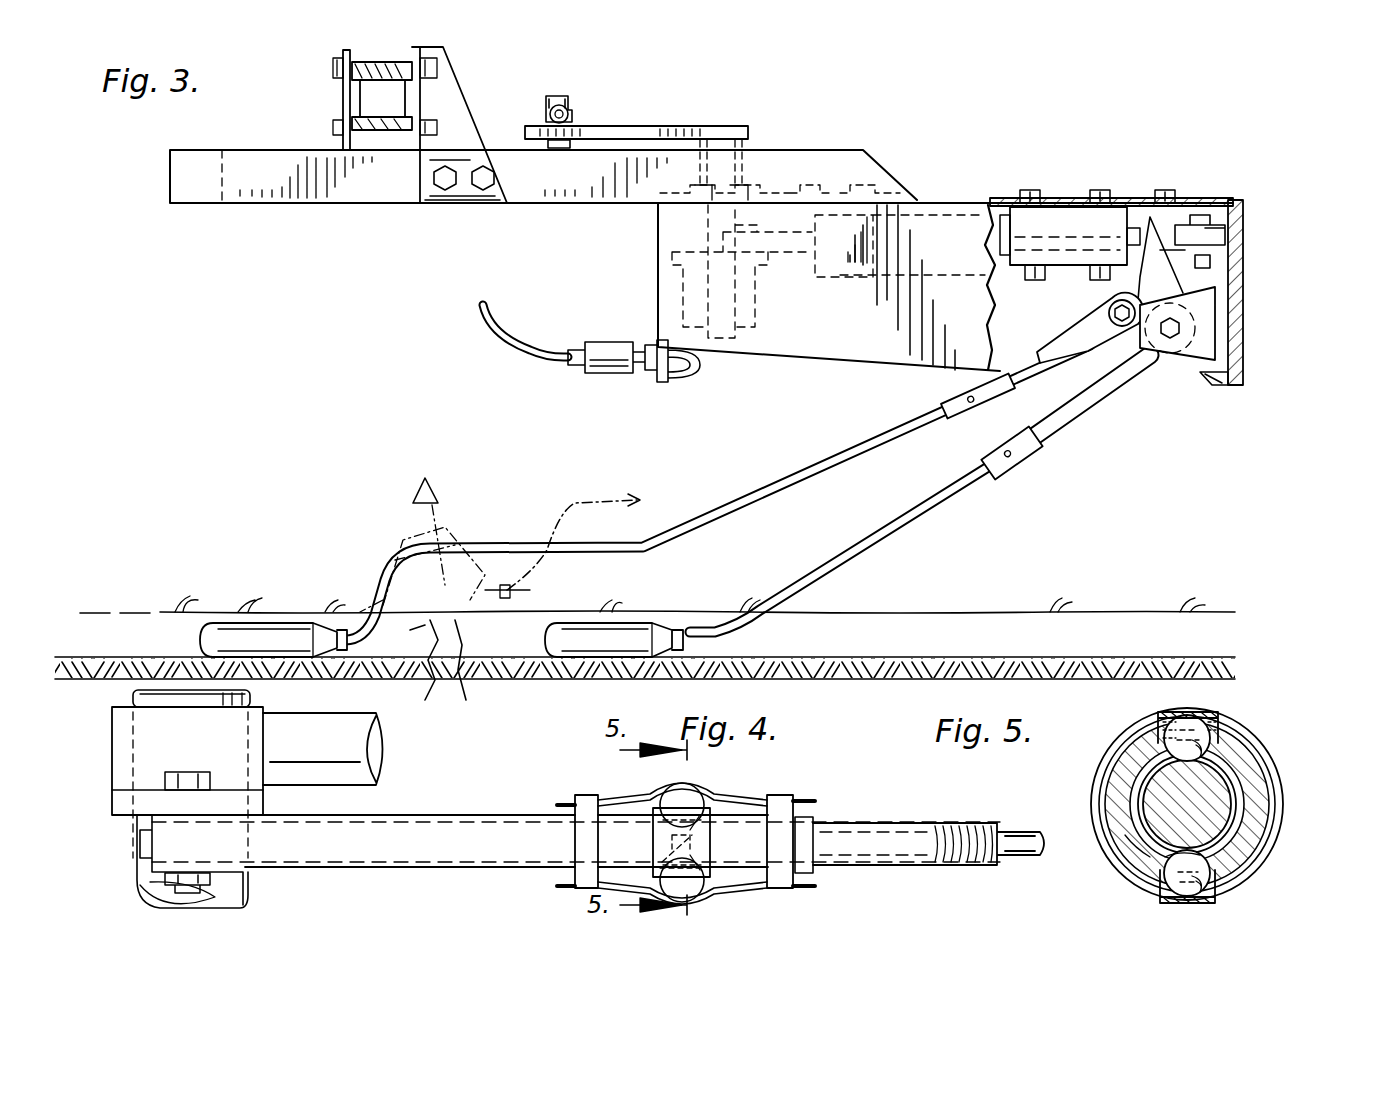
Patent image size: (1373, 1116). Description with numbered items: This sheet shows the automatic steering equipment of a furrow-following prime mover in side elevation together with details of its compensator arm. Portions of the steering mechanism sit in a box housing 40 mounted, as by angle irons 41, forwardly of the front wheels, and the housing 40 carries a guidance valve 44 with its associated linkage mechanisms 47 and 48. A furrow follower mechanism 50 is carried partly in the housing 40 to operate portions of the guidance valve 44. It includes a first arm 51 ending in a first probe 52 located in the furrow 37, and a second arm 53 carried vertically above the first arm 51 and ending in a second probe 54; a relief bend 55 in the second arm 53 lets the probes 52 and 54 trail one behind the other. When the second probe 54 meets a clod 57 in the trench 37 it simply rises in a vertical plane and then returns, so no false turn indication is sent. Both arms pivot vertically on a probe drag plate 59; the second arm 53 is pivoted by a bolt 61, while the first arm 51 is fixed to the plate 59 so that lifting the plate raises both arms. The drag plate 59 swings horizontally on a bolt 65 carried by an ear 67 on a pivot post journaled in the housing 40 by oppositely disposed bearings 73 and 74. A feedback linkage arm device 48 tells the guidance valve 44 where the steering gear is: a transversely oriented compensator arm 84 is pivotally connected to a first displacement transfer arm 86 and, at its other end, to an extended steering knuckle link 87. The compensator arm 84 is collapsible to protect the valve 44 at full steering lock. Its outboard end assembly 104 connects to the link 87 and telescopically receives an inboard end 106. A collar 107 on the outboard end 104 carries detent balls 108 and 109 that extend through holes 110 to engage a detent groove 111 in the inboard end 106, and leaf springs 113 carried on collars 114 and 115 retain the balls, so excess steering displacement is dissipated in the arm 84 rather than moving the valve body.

In FIG. 3, the furrow 37 is at (1145, 620).
In FIG. 3, the box housing 40 is at (830, 314).
In FIG. 3, the angle irons 41 is at (835, 168).
In FIG. 3, the guidance valve 44 is at (935, 225).
In FIG. 3, the linkage mechanism 47 is at (1168, 222).
In FIG. 3, the feedback linkage arm device 48 is at (636, 115).
In FIG. 3, the furrow follower mechanism 50 is at (920, 493).
In FIG. 3, the first arm 51 is at (960, 478).
In FIG. 3, the first probe 52 is at (640, 632).
In FIG. 3, the second arm 53 is at (830, 455).
In FIG. 3, the second probe 54 is at (262, 630).
In FIG. 3, the relief bend 55 is at (510, 545).
In FIG. 3, the clod 57 is at (432, 672).
In FIG. 3, the probe drag plate 59 is at (1130, 295).
In FIG. 3, the bolt 61 is at (1105, 313).
In FIG. 3, the bolt 65 is at (1172, 338).
In FIG. 3, the ear 67 is at (1212, 310).
In FIG. 3, the bearing 73 is at (1243, 215).
In FIG. 3, the bearing 74 is at (1232, 380).
In FIG. 3, the compensator arm 84 is at (556, 90).
In FIG. 4, the compensator arm 84 is at (880, 826).
In FIG. 3, the first displacement transfer arm 86 is at (650, 128).
In FIG. 4, the steering knuckle link 87 is at (200, 750).
In FIG. 4, the outboard end assembly 104 is at (423, 817).
In FIG. 5, the outboard end assembly 104 is at (1118, 800).
In FIG. 4, the inboard end 106 is at (935, 828).
In FIG. 5, the inboard end 106 is at (1135, 840).
In FIG. 4, the collar 107 is at (686, 820).
In FIG. 5, the collar 107 is at (1265, 778).
In FIG. 4, the detent ball 108 is at (680, 808).
In FIG. 5, the detent ball 108 is at (1205, 730).
In FIG. 4, the detent ball 109 is at (705, 885).
In FIG. 5, the detent ball 109 is at (1165, 878).
In FIG. 4, the holes 110 is at (672, 825).
In FIG. 5, the holes 110 is at (1160, 716).
In FIG. 4, the detent groove 111 is at (712, 845).
In FIG. 5, the detent groove 111 is at (1235, 815).
In FIG. 4, the leaf springs 113 is at (610, 798).
In FIG. 5, the leaf springs 113 is at (1212, 712).
In FIG. 4, the collar 114 is at (572, 825).
In FIG. 4, the collar 115 is at (785, 848).
In FIG. 5, the collar 115 is at (1105, 765).